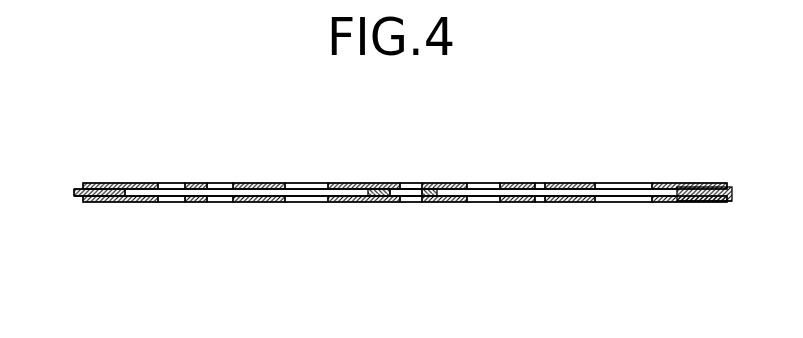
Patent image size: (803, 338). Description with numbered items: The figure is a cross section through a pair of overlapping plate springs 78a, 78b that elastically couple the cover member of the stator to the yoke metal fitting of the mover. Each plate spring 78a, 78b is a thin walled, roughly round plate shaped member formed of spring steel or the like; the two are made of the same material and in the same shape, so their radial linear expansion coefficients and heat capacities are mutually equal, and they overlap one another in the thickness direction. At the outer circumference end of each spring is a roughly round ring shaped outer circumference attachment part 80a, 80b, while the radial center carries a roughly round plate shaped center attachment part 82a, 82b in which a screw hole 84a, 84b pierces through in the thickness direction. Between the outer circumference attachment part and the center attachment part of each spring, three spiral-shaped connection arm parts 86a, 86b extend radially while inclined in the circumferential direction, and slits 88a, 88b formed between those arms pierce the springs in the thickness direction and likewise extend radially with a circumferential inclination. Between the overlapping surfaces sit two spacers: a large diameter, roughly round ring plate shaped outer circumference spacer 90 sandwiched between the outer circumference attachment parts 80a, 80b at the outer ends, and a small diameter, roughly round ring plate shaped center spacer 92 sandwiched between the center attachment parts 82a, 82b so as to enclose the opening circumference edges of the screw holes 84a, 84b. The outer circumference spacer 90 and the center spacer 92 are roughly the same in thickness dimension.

The plate spring 78a is at (711, 176).
The plate spring 78b is at (711, 210).
The outer circumference attachment part 80a is at (90, 183).
The outer circumference attachment part 80b is at (98, 202).
The center attachment part 82a is at (352, 183).
The center attachment part 82b is at (352, 202).
The screw hole 84a is at (387, 183).
The screw hole 84b is at (412, 202).
The connection arm parts 86a is at (207, 183).
The connection arm parts 86b is at (206, 202).
The slits 88a is at (166, 183).
The slits 88b is at (168, 202).
The outer circumference spacer 90 is at (122, 183).
The center spacer 92 is at (431, 183).